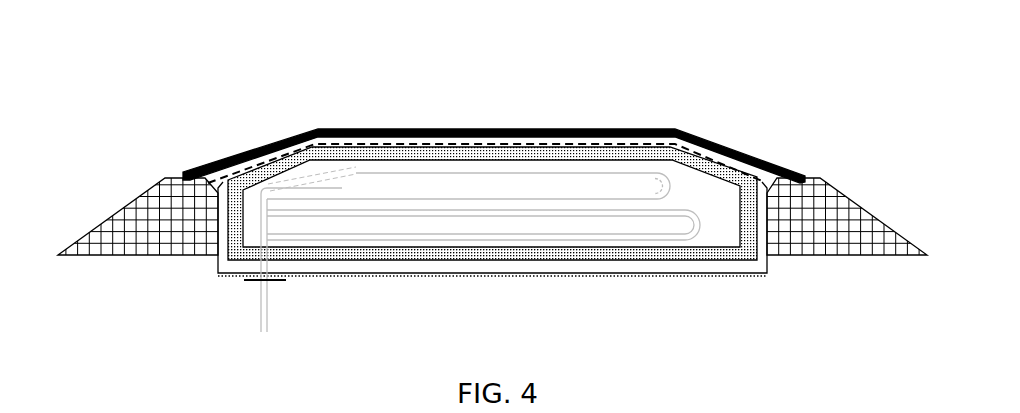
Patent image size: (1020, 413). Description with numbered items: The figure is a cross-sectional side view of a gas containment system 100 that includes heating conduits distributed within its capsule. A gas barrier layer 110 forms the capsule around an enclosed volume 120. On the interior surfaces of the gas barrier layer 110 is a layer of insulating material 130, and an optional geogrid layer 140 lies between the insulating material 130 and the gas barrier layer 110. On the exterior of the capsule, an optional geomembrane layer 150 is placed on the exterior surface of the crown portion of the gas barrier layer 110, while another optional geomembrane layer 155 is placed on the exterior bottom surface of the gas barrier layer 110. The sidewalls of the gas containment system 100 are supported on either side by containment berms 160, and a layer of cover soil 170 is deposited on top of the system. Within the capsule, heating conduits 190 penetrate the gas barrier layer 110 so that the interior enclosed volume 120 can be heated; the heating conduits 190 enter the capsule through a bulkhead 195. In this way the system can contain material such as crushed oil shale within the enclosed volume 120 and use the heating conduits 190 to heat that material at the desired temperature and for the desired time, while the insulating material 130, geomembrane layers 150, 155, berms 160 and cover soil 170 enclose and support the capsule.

The gas containment system 100 is at (384, 78).
The gas barrier layer 110 is at (615, 275).
The enclosed volume 120 is at (532, 180).
The layer of insulating material 130 is at (518, 258).
The geogrid layer 140 is at (695, 152).
The geomembrane layer 150 is at (423, 130).
The geomembrane layer 155 is at (402, 277).
The containment berms 160 is at (802, 255).
The layer of cover soil 170 is at (647, 130).
The heating conduits 190 is at (310, 182).
The bulkhead 195 is at (252, 282).